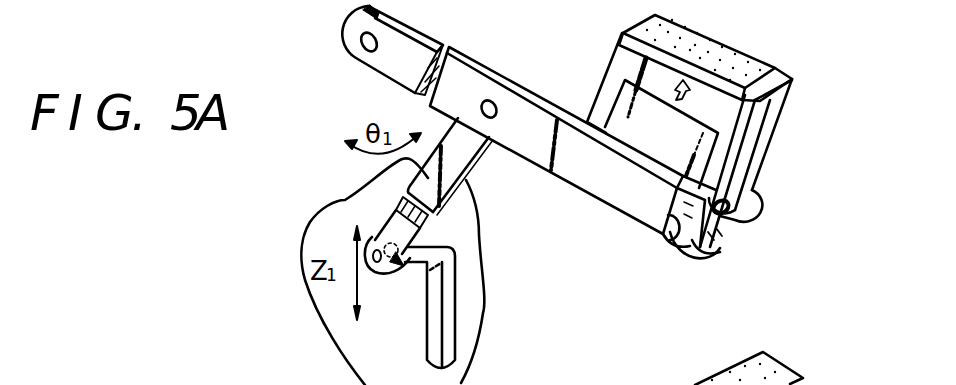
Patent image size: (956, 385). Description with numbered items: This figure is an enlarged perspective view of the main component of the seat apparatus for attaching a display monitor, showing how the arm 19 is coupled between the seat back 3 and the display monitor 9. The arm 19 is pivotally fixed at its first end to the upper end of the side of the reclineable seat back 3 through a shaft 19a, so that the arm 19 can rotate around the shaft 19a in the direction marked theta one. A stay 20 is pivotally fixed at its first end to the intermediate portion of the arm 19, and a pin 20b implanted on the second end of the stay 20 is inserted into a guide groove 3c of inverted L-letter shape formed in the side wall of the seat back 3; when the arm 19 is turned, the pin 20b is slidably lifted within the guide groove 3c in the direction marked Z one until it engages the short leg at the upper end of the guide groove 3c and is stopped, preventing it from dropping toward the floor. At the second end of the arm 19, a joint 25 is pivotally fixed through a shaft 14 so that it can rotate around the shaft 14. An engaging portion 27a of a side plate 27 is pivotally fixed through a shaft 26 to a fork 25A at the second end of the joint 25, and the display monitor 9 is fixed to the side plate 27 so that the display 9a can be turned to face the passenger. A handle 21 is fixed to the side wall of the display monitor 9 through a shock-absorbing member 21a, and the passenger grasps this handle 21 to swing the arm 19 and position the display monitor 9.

The reclineable seat back 3 is at (473, 325).
The guide groove 3c is at (427, 342).
The display monitor 9 is at (608, 75).
The display 9a is at (618, 120).
The shaft 14 is at (682, 240).
The arm 19 is at (588, 182).
The shaft 19a is at (358, 53).
The stay 20 is at (470, 172).
The pin 20b is at (375, 240).
The handle 21 is at (778, 78).
The shock-absorbing member 21a is at (713, 47).
The joint 25 is at (687, 258).
The fork 25A is at (720, 257).
The shaft 26 is at (740, 215).
The side plate 27 is at (763, 123).
The engaging portion 27a is at (740, 204).